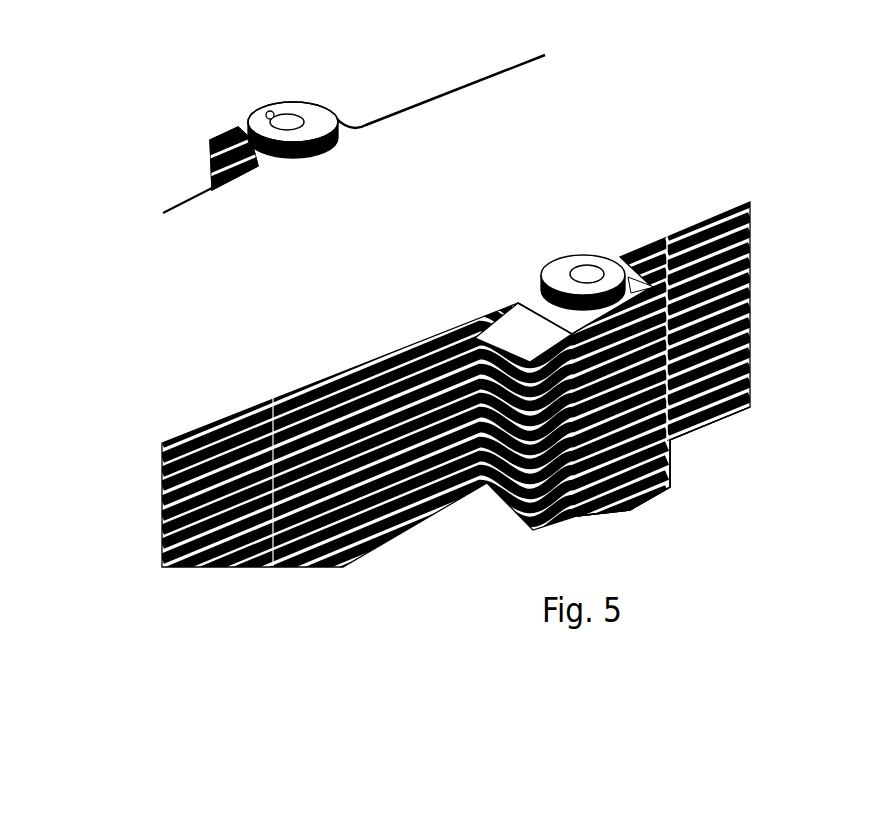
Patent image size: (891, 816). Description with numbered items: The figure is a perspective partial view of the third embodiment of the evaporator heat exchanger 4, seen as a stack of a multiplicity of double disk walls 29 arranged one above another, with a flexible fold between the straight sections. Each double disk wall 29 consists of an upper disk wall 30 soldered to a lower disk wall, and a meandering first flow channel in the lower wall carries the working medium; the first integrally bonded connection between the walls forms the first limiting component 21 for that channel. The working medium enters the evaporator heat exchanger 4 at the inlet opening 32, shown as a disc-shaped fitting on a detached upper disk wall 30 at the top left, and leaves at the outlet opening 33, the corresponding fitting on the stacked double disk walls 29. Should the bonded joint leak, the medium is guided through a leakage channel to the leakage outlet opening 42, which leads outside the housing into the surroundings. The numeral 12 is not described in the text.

The evaporator heat exchanger 4 is at (385, 600).
The battery module 12 is at (582, 726).
The first limiting component 21 is at (445, 321).
The double disk wall 29 is at (680, 475).
The upper disk wall 30 is at (245, 223).
The inlet opening 32 is at (297, 122).
The outlet opening 33 is at (588, 263).
The leakage outlet opening 42 is at (263, 110).